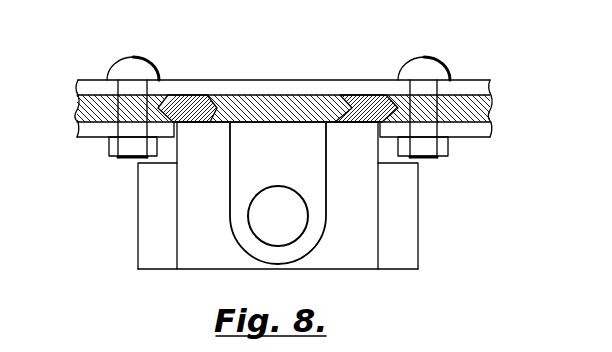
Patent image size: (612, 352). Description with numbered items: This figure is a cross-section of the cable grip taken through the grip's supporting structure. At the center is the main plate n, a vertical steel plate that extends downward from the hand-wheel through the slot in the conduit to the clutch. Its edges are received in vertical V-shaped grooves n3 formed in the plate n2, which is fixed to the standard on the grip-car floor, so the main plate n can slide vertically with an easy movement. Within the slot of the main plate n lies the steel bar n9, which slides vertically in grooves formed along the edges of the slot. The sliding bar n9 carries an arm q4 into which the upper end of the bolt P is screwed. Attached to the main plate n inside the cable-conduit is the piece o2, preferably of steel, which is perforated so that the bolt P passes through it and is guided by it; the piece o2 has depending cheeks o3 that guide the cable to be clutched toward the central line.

The plate n2 is at (503, 108).
The V-shaped grooves n3 is at (398, 72).
The main plate n is at (352, 126).
The steel bar n9 is at (277, 136).
The arm q4 is at (327, 215).
The bolt P is at (290, 227).
The piece o2 is at (214, 241).
The depending cheeks o3 is at (157, 216).